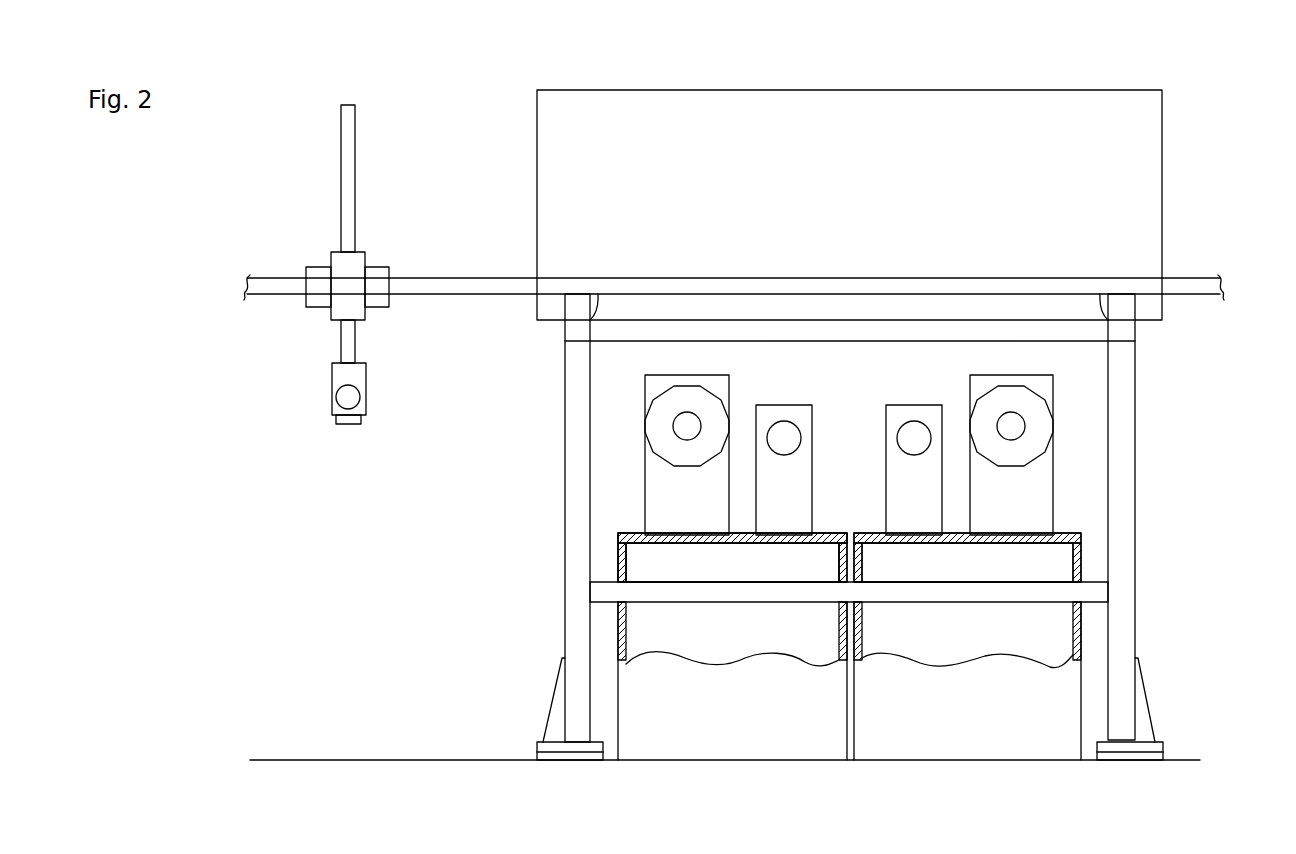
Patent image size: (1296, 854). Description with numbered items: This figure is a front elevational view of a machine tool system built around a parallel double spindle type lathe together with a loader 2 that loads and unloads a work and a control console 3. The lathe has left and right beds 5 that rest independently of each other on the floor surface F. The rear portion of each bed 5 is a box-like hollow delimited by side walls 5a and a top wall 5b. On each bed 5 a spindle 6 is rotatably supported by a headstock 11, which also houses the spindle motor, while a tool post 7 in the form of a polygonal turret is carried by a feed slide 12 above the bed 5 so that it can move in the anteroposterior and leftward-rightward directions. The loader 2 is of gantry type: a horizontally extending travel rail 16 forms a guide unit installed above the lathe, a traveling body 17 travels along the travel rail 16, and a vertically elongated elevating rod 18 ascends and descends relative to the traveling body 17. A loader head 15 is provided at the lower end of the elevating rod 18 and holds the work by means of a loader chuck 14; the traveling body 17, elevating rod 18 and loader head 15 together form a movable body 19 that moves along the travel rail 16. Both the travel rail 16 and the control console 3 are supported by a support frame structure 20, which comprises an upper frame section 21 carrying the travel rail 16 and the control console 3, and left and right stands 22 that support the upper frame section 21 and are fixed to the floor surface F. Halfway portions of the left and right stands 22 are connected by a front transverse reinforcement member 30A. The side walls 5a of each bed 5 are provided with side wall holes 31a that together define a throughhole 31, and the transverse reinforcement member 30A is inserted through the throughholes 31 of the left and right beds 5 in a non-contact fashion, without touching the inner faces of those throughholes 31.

The loader 2 is at (320, 178).
The control console 3 is at (925, 90).
The beds 5 is at (897, 738).
The side walls 5a is at (862, 635).
The top wall 5b is at (910, 540).
The spindle 6 is at (896, 422).
The tool post 7 is at (652, 383).
The headstock 11 is at (887, 502).
The feed slide 12 is at (645, 490).
The loader chuck 14 is at (362, 428).
The loader head 15 is at (332, 382).
The travel rail 16 is at (272, 280).
The traveling body 17 is at (382, 267).
The elevating rod 18 is at (357, 181).
The movable body 19 is at (357, 264).
The support frame structure 20 is at (548, 587).
The upper frame section 21 is at (1068, 341).
The stands 22 is at (565, 527).
The front transverse reinforcement member 30A is at (1108, 602).
The throughhole 31 is at (1088, 576).
The side wall holes 31a is at (618, 605).
The floor surface F is at (367, 760).